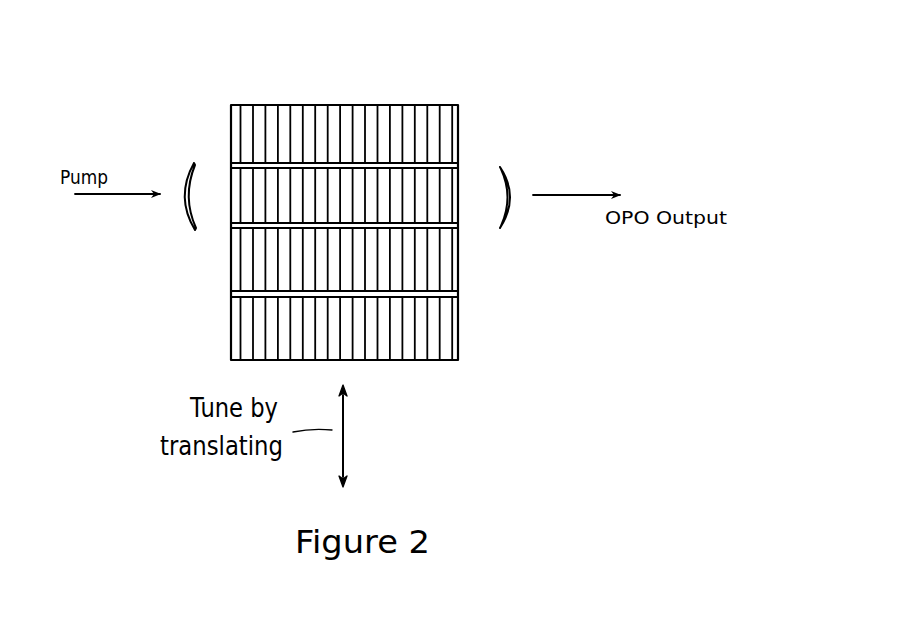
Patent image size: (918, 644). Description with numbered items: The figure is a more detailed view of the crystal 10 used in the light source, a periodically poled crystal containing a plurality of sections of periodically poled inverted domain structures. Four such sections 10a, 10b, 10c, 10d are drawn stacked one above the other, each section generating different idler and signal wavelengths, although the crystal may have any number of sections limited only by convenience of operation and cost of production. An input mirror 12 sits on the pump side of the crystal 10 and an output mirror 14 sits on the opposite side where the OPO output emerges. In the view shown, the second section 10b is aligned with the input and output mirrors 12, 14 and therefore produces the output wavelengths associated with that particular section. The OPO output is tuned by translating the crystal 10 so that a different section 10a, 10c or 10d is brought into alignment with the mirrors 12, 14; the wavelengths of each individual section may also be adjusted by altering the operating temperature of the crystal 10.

The crystal 10 is at (401, 210).
The first section 10a is at (447, 135).
The second section 10b is at (447, 202).
The third section 10c is at (445, 270).
The fourth section 10d is at (445, 338).
The input mirror 12 is at (184, 157).
The output mirror 14 is at (502, 162).